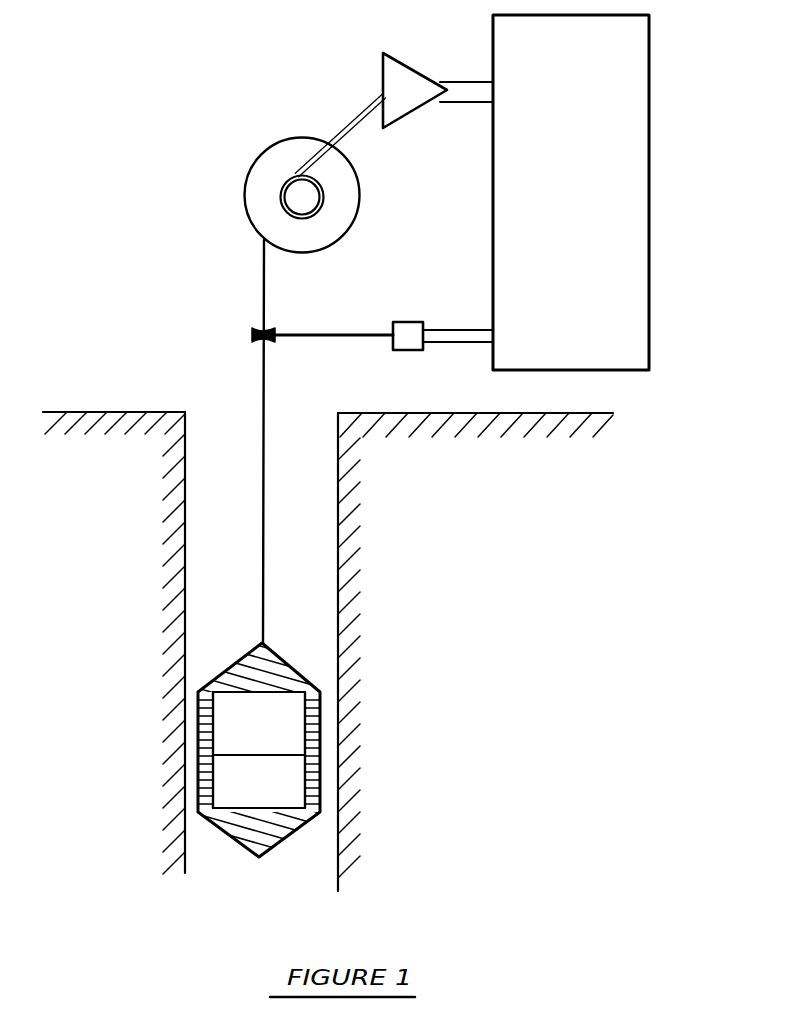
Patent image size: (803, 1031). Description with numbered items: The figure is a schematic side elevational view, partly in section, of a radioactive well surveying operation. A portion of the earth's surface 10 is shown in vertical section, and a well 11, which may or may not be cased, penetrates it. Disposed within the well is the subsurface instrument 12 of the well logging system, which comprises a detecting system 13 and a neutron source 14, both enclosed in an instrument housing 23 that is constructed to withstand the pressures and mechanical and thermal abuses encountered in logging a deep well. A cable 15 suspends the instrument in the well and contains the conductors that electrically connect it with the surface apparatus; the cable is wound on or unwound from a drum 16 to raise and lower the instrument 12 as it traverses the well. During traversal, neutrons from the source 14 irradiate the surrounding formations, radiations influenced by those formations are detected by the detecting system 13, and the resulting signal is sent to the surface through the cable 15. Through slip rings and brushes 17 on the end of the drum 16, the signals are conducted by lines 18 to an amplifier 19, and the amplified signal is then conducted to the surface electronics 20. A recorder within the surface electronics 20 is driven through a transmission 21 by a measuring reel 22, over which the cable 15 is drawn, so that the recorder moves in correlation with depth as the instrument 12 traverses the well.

The earth's surface 10 is at (84, 453).
The well 11 is at (302, 430).
The subsurface instrument 12 is at (304, 739).
The detecting system 13 is at (287, 735).
The neutron source 14 is at (292, 793).
The cable 15 is at (264, 494).
The drum 16 is at (358, 215).
The slip rings and brushes 17 is at (323, 192).
The lines 18 is at (356, 118).
The amplifier 19 is at (393, 70).
The surface electronics 20 is at (633, 77).
The transmission 21 is at (402, 330).
The measuring reel 22 is at (268, 328).
The instrument housing 23 is at (288, 822).